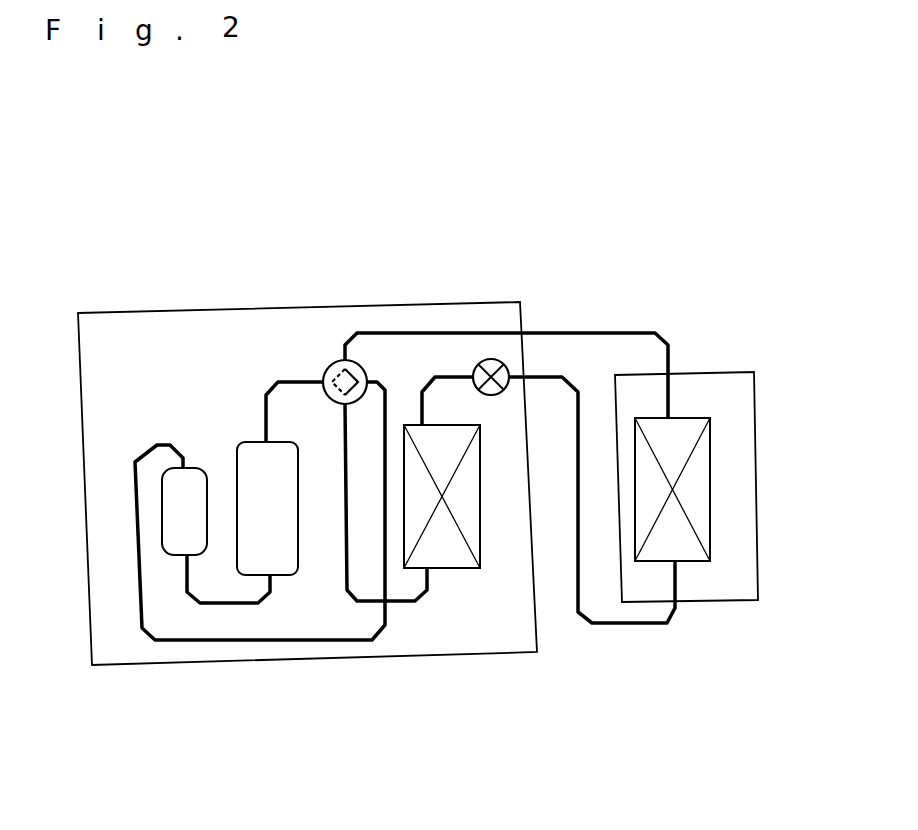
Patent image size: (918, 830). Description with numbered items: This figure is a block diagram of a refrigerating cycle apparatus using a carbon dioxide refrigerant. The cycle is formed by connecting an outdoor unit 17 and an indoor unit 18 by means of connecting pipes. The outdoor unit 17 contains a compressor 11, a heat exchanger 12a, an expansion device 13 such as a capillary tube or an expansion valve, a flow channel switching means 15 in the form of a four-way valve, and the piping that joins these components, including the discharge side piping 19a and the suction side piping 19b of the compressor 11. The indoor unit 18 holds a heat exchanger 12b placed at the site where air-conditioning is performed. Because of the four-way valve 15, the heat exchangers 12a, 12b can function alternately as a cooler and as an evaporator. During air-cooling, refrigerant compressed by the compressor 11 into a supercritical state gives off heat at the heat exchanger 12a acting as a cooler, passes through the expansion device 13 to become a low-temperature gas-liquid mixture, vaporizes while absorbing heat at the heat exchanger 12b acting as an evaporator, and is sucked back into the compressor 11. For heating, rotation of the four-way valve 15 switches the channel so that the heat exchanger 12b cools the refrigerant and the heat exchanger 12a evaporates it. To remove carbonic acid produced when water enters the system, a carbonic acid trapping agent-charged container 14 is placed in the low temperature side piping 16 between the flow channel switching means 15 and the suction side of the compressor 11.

The compressor 11 is at (250, 438).
The heat exchanger 12a is at (453, 570).
The heat exchanger 12b is at (693, 562).
The expansion device 13 is at (483, 360).
The carbonic acid trapping agent-charged container 14 is at (167, 472).
The flow channel switching means (four-way valve) 15 is at (330, 364).
The piping at a low temperature side 16 is at (208, 640).
The outdoor unit 17 is at (383, 305).
The indoor unit 18 is at (732, 370).
The discharge side piping of a compressor 19a is at (265, 393).
The suction side piping of a compressor 19b is at (263, 602).